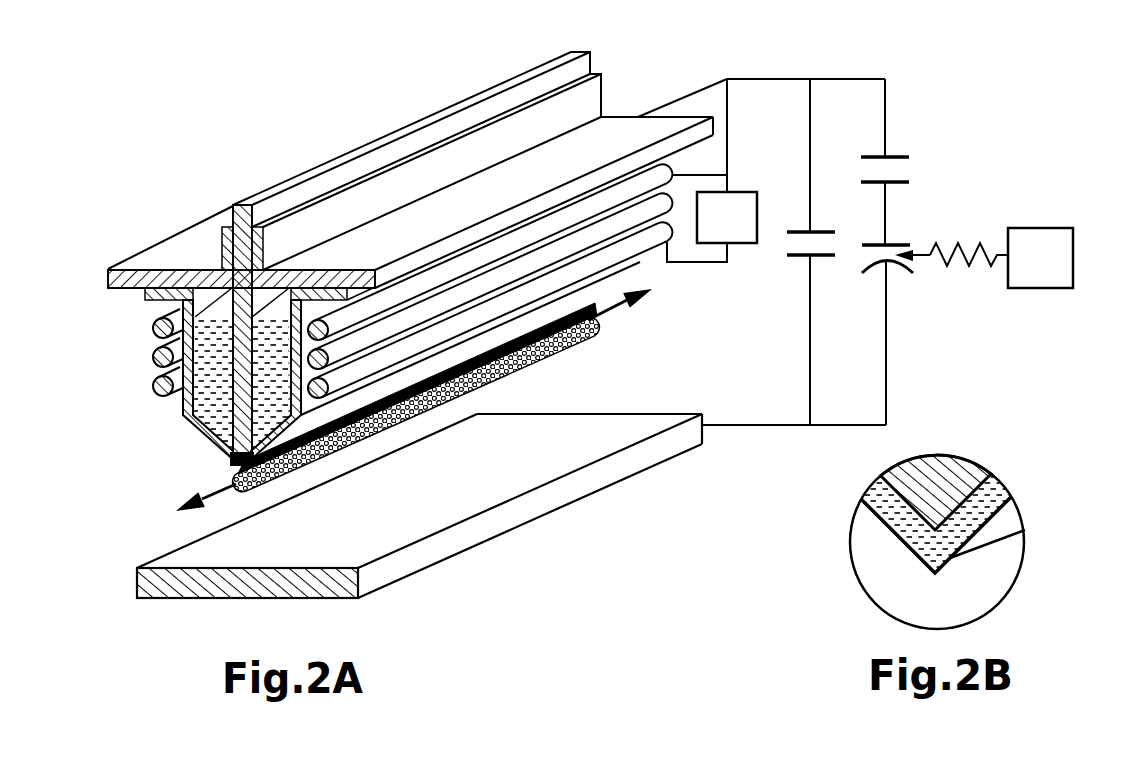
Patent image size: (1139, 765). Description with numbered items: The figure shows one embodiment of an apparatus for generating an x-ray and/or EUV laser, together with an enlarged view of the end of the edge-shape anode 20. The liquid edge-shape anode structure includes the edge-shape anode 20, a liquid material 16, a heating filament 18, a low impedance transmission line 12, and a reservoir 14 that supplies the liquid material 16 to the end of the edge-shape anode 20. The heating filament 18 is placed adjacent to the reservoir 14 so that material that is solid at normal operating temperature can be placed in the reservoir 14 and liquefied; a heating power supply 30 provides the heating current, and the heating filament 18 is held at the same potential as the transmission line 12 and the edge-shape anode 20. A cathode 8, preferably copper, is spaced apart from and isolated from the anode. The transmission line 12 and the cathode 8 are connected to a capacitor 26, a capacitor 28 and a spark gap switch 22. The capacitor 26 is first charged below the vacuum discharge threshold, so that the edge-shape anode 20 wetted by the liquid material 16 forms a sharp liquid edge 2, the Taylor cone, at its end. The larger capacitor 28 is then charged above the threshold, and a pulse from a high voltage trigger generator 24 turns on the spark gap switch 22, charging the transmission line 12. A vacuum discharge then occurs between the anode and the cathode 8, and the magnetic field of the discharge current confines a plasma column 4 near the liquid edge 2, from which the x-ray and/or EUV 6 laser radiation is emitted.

In FIG. 2B, the liquid edge 2 is at (917, 557).
In FIG. 2A, the plasma column 4 is at (232, 472).
In FIG. 2A, the x-ray and/or EUV 6 is at (147, 494).
In FIG. 2A, the cathode 8 is at (137, 582).
In FIG. 2A, the transmission line 12 is at (108, 281).
In FIG. 2A, the reservoir 14 is at (183, 308).
In FIG. 2A, the liquid material 16 is at (156, 345).
In FIG. 2A, the heating filament 18 is at (156, 391).
In FIG. 2A, the edge-shape anode 20 is at (197, 430).
In FIG. 2B, the edge-shape anode 20 is at (968, 488).
In FIG. 2A, the spark gap switch 22 is at (898, 268).
In FIG. 2A, the high voltage trigger generator 24 is at (1001, 258).
In FIG. 2A, the capacitor 26 is at (810, 242).
In FIG. 2A, the capacitor 28 is at (890, 167).
In FIG. 2A, the heating power supply 30 is at (727, 217).